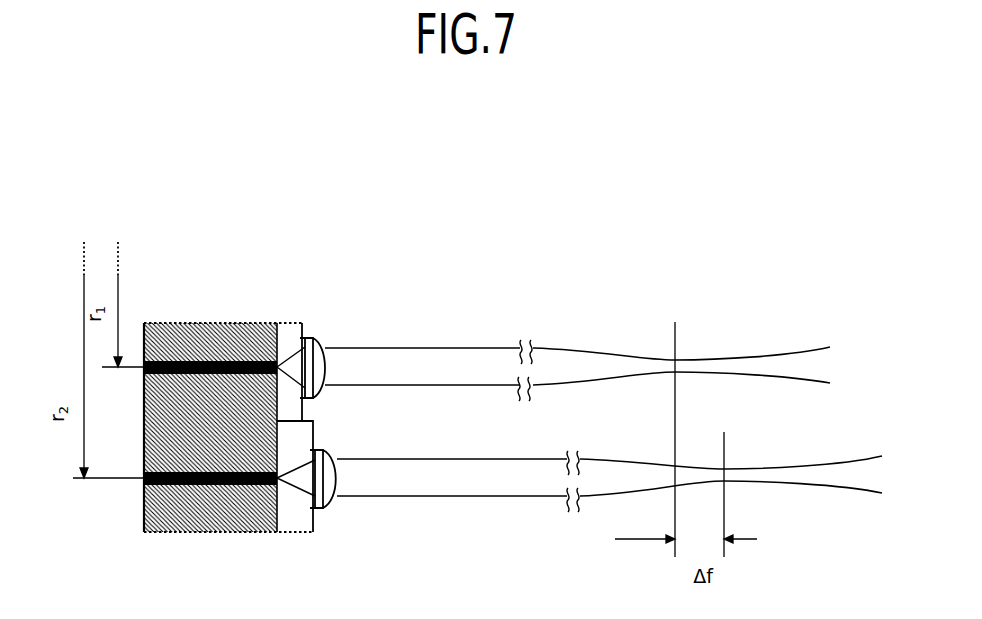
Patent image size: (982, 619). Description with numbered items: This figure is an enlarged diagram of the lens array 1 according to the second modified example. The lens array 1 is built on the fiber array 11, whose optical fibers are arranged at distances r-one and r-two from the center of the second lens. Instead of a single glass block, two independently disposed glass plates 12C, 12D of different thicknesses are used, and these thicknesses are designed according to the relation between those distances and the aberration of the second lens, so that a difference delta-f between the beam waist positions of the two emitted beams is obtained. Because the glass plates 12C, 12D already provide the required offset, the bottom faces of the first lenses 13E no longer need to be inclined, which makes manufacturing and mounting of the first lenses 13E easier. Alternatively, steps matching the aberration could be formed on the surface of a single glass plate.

The lens array 1 is at (205, 249).
The fiber array 11 is at (179, 322).
The glass plate 12C is at (290, 322).
The glass plate 12D is at (291, 533).
The first lens 13E is at (306, 338).